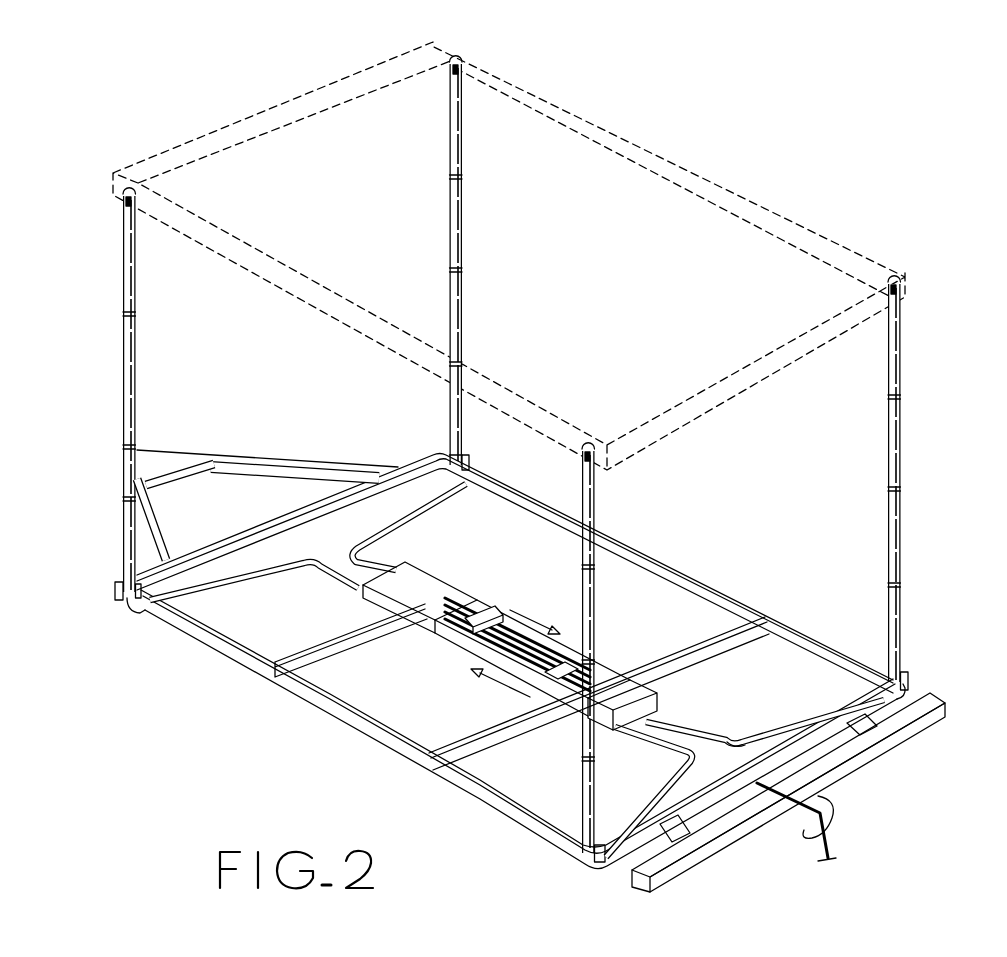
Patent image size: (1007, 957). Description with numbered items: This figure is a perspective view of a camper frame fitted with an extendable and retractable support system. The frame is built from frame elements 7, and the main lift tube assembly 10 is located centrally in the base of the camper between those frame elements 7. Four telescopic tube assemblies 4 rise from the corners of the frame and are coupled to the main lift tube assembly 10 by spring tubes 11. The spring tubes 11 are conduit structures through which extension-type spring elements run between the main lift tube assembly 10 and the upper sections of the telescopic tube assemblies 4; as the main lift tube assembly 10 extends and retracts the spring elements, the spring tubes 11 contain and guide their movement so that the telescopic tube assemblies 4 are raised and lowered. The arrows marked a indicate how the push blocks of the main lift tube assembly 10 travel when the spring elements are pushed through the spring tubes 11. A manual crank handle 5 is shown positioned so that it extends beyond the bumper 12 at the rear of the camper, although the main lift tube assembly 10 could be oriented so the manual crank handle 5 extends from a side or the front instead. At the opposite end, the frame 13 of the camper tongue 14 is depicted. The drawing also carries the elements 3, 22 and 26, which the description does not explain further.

The upper frame (phantom) 3 is at (652, 150).
The telescopic tube assembly 4 is at (432, 234).
The manual crank handle 5 is at (830, 860).
The frame element 7 is at (290, 512).
The main lift tube assembly 10 is at (413, 590).
The spring tube 11 is at (400, 512).
The bumper 12 is at (705, 856).
The frame 13 is at (275, 458).
The tongue 14 is at (172, 458).
The pole top fitting 22 is at (121, 198).
The bent tube portion 26 is at (742, 742).